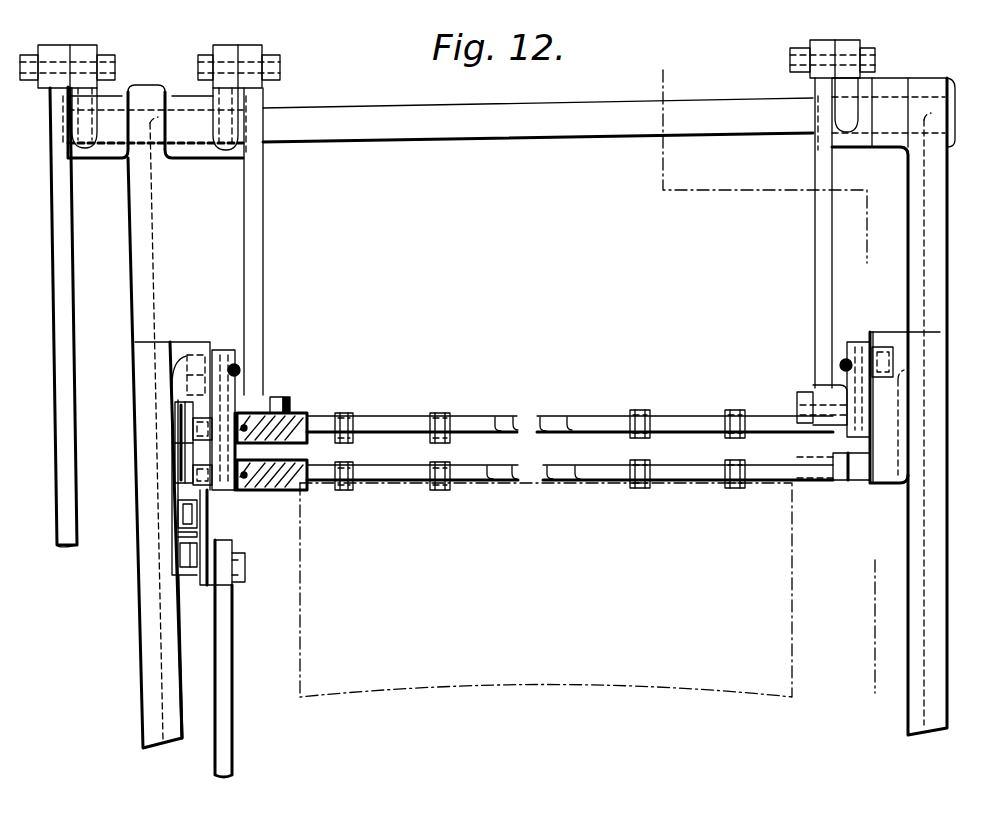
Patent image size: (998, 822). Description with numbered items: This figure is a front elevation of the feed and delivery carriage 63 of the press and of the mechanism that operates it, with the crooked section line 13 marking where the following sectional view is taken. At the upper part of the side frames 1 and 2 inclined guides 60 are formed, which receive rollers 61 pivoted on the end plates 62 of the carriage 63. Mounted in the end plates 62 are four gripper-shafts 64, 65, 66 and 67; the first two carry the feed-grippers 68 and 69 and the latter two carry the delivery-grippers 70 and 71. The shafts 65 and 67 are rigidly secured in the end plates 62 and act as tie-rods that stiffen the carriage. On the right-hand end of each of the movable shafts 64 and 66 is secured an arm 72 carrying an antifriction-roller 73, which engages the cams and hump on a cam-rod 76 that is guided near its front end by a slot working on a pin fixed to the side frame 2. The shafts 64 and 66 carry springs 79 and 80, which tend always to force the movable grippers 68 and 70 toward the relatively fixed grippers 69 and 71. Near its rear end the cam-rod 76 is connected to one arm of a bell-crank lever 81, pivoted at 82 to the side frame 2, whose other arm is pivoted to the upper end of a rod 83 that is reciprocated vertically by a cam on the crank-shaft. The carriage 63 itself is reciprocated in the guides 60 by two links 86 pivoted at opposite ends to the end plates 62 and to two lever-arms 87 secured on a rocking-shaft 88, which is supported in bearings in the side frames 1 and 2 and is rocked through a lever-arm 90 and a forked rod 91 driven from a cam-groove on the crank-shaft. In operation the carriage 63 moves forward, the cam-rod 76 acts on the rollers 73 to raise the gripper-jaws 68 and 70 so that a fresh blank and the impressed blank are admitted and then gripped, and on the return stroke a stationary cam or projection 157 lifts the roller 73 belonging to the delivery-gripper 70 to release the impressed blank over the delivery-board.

The side frame 1 is at (943, 336).
The side frame 2 is at (142, 372).
The section line 13 is at (595, 385).
The inclined guides 60 is at (888, 403).
The rollers 61 is at (200, 358).
The end plates 62 is at (224, 362).
The feed and delivery carriage 63 is at (545, 423).
The gripper-shaft 64 is at (527, 430).
The gripper-shaft 65 is at (503, 424).
The gripper-shaft 66 is at (575, 487).
The gripper-shaft 67 is at (580, 480).
The feed-gripper 68 is at (440, 421).
The feed-gripper 69 is at (440, 435).
The delivery-gripper 70 is at (440, 468).
The delivery-gripper 71 is at (440, 490).
The arm 72 is at (200, 470).
The antifriction-roller 73 is at (182, 422).
The cam-rod 76 is at (185, 515).
The spring 79 is at (295, 415).
The spring 80 is at (262, 493).
The bell-crank lever 81 is at (210, 505).
The pivot 82 is at (238, 546).
The rod 83 is at (224, 618).
The links 86 is at (248, 180).
The lever-arms 87 is at (228, 110).
The rocking-shaft 88 is at (506, 120).
The lever-arm 90 is at (88, 103).
The forked rod 91 is at (62, 190).
The stationary cam 157 is at (180, 535).